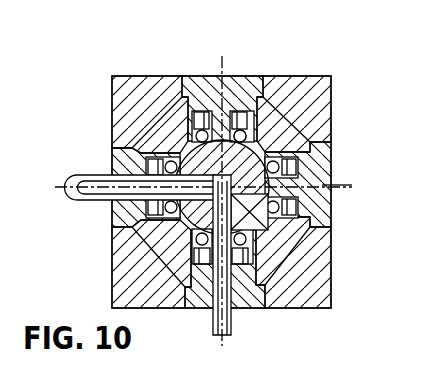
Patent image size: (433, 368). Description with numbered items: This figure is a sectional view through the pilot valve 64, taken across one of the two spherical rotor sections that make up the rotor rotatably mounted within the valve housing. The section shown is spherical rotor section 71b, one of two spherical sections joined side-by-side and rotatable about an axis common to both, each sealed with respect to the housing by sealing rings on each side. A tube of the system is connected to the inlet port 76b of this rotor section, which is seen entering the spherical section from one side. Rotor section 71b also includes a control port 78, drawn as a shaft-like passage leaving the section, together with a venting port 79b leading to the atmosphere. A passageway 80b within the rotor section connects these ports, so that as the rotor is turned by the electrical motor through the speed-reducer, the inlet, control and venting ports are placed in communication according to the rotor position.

The pilot valve 64 is at (186, 68).
The spherical rotor section 71b is at (244, 152).
The inlet port 76b is at (84, 176).
The control port 78 is at (238, 318).
The venting port 79b is at (333, 180).
The passageway 80b is at (246, 206).